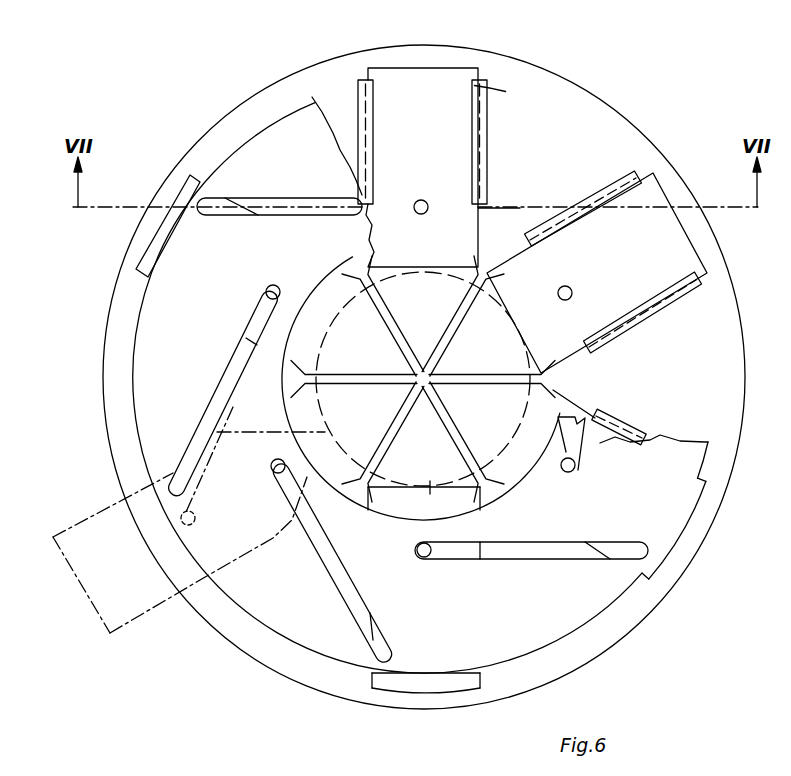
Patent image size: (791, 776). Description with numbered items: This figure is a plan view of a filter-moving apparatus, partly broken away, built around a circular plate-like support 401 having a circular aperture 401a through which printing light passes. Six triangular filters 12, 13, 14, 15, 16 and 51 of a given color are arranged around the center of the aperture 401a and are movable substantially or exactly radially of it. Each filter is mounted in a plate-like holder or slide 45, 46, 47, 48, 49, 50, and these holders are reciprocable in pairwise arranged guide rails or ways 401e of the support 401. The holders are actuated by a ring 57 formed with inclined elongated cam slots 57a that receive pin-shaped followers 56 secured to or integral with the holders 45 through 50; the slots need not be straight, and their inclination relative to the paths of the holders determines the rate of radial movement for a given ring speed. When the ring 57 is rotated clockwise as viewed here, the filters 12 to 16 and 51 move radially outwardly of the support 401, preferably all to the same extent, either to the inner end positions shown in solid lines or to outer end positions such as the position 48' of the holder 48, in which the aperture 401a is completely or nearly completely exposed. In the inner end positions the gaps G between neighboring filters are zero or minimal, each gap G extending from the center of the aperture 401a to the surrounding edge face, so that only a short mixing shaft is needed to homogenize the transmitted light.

The triangular filter 12 is at (555, 378).
The triangular filter 13 is at (494, 500).
The triangular filter 14 is at (350, 506).
The triangular filter 15 is at (300, 388).
The triangular filter 16 is at (358, 250).
The holder 45 is at (655, 180).
The holder 46 is at (650, 588).
The holder 47 is at (362, 690).
The holder 48 is at (208, 572).
The outer end position of holder 48' is at (113, 572).
The holder 49 is at (134, 280).
The holder 50 is at (478, 68).
The triangular filter 51 is at (476, 266).
The pin-shaped follower 56 is at (428, 204).
The ring 57 is at (568, 628).
The cam slot 57a is at (290, 198).
The support 401 is at (282, 90).
The aperture 401a is at (425, 517).
The guide rail 401e is at (360, 80).
The gap G is at (446, 324).